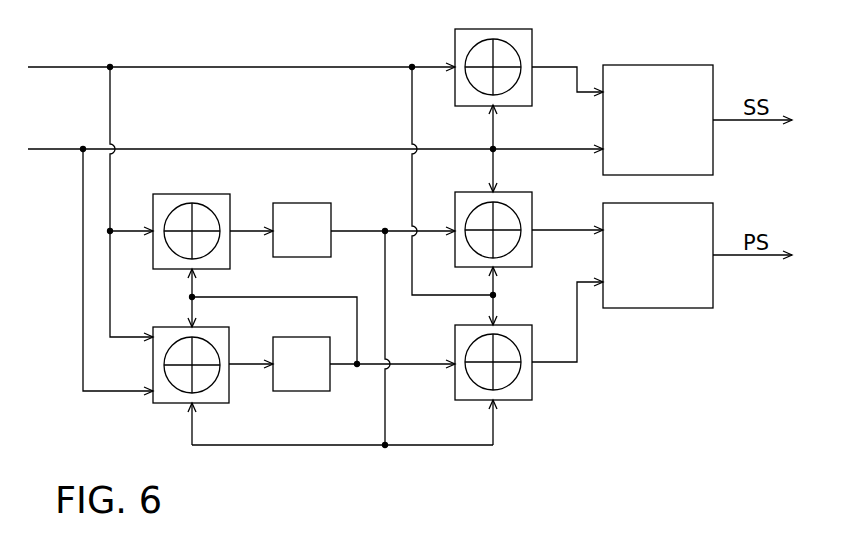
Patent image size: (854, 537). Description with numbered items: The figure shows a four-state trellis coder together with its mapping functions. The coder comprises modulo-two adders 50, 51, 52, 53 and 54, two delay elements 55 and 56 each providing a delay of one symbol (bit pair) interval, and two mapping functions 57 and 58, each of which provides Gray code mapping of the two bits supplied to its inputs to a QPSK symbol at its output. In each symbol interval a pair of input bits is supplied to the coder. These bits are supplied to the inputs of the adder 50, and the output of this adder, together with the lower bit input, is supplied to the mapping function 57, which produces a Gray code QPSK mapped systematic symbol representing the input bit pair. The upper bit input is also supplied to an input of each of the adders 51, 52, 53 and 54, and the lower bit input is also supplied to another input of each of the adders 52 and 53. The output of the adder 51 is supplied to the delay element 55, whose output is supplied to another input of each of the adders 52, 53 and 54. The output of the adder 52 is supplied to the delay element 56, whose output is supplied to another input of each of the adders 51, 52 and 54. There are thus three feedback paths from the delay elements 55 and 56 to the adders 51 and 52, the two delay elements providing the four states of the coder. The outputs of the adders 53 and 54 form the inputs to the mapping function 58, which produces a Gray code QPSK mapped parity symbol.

The modulo-2 adder 50 is at (527, 95).
The modulo-2 adder 51 is at (225, 198).
The modulo-2 adder 52 is at (224, 391).
The modulo-2 adder 53 is at (527, 196).
The modulo-2 adder 54 is at (527, 390).
The delay element 55 is at (316, 203).
The delay element 56 is at (310, 385).
The mapping function 57 is at (705, 158).
The mapping function 58 is at (705, 295).